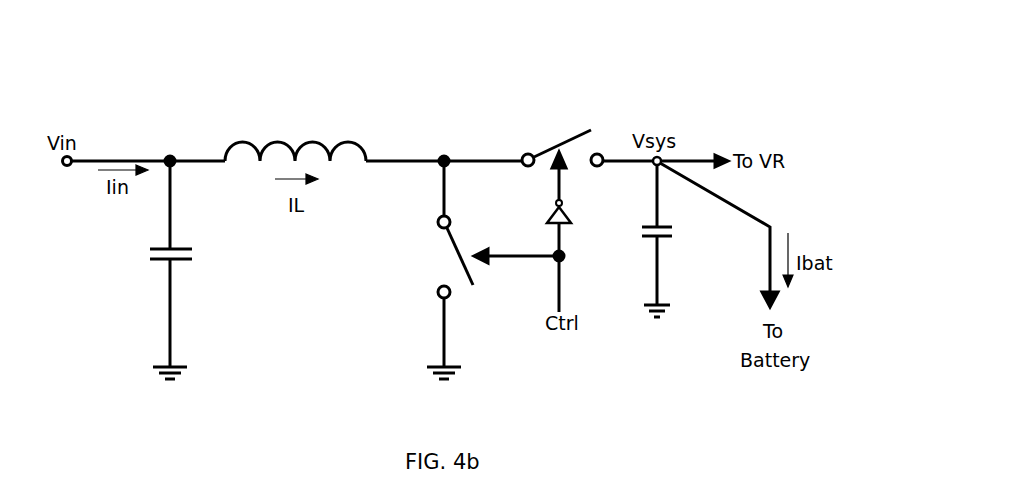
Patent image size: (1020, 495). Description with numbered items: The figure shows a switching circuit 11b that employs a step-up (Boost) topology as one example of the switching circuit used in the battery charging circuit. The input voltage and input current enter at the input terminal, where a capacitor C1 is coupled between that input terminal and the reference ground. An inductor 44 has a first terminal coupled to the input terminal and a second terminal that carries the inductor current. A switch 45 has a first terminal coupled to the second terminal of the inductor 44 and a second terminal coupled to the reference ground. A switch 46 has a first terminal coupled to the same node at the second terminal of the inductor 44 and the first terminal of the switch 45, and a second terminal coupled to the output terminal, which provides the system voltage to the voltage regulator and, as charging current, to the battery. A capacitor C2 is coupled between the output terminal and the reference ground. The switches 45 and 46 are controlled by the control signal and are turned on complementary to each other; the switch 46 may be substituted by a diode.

The inductor 44 is at (298, 137).
The switch 45 is at (450, 248).
The switch 46 is at (561, 136).
The switching circuit 11b is at (762, 98).
The capacitor C1 is at (154, 270).
The capacitor C2 is at (673, 241).